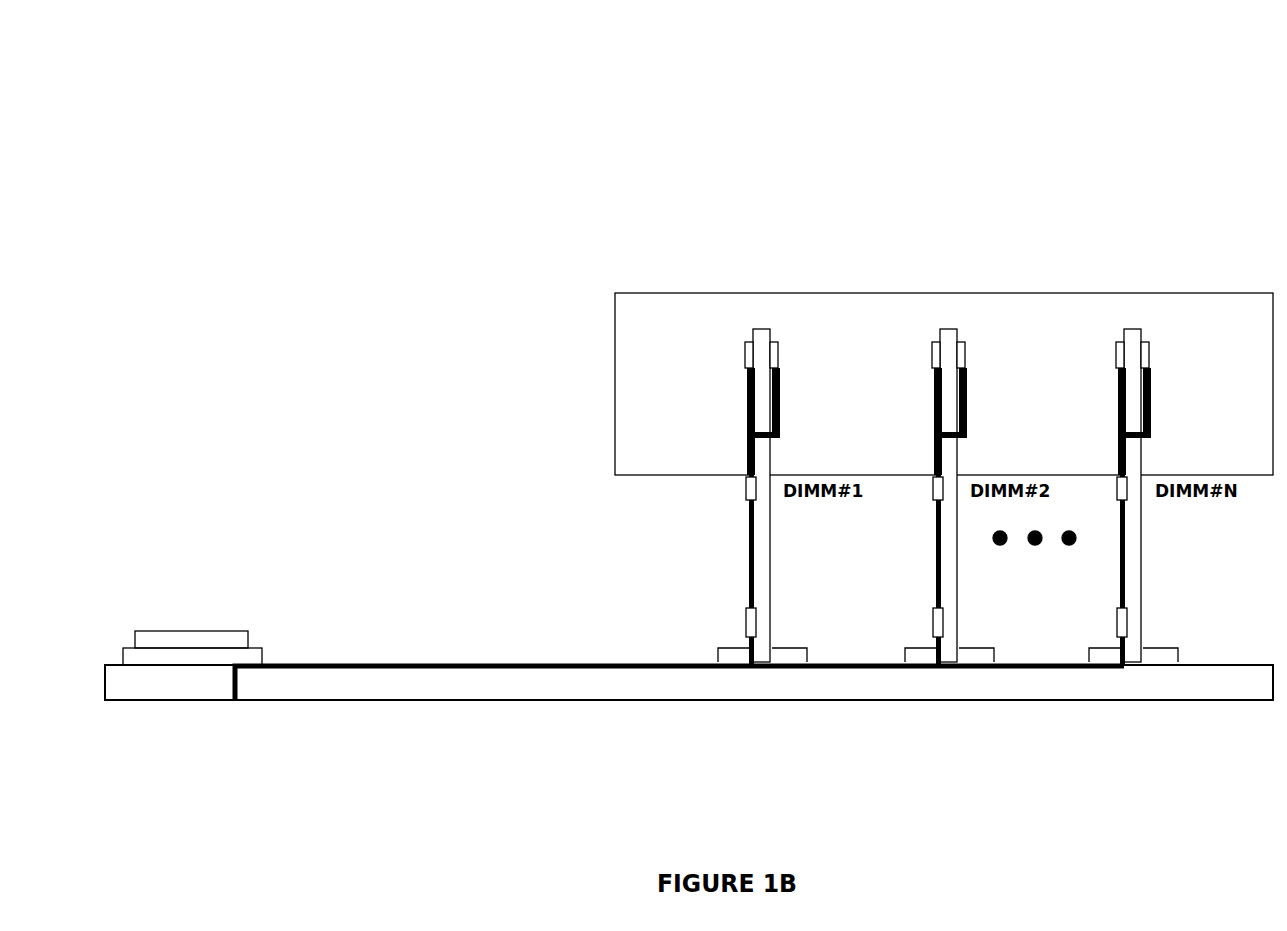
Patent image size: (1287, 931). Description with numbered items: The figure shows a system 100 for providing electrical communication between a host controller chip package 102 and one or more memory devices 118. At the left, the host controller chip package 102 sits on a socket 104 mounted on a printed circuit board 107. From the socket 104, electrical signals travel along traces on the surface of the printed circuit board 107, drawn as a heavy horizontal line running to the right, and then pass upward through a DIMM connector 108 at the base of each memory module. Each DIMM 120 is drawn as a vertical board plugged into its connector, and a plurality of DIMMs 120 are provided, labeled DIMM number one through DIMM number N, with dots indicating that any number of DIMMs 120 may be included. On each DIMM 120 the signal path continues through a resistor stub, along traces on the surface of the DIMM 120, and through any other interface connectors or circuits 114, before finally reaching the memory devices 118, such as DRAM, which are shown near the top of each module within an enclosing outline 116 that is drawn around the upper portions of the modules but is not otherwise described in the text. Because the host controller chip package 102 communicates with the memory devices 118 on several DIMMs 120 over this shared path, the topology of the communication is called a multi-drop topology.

The system 100 is at (692, 64).
The host controller chip package 102 is at (157, 631).
The socket 104 is at (125, 650).
The printed circuit board 107 is at (485, 561).
The DIMM connector 108 is at (718, 650).
The interface connectors or circuits 114 is at (748, 488).
The enclosure 116 is at (615, 427).
The memory device 118 is at (745, 352).
The DIMM 120 is at (1183, 545).